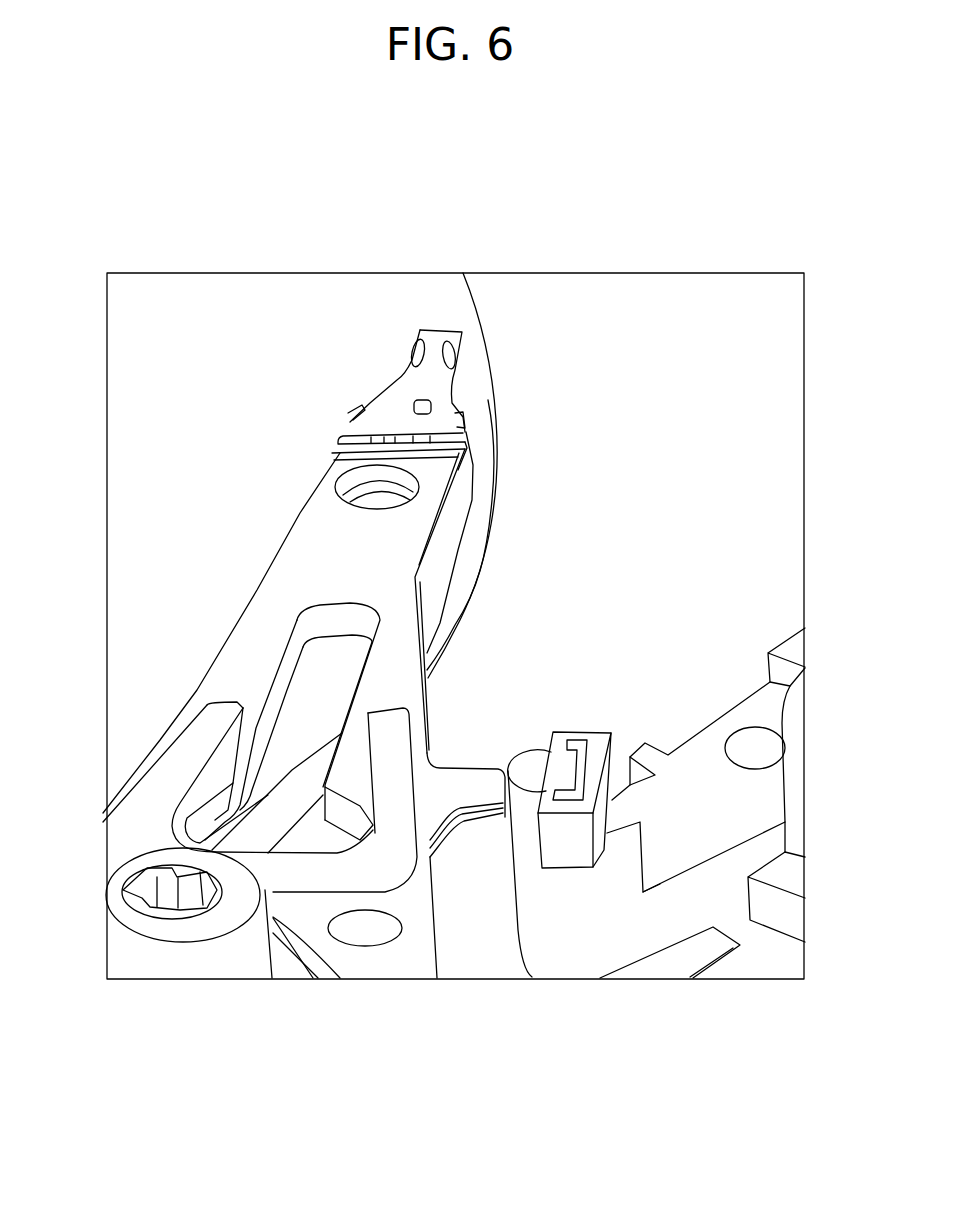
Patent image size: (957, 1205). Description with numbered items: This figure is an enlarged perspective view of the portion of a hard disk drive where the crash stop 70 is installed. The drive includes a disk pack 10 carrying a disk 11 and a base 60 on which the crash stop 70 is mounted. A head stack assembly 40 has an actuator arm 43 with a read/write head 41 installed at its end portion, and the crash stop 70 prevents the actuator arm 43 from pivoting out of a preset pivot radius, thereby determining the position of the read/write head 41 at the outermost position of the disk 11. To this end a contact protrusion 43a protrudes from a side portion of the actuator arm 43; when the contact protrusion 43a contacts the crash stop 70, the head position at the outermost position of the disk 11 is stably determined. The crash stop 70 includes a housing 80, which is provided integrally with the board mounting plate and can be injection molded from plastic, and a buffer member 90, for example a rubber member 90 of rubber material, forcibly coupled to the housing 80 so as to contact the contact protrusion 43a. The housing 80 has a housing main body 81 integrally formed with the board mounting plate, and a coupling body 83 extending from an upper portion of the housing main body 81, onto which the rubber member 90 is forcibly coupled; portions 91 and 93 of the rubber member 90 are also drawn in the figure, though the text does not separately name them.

The disk pack 10 is at (492, 318).
The disk 11 is at (300, 330).
The head stack assembly 40 is at (288, 506).
The read/write head 41 is at (443, 328).
The actuator arm 43 is at (288, 613).
The contact protrusion 43a is at (478, 790).
The base 60 is at (660, 402).
The crash stop 70 is at (738, 783).
The housing 80 is at (518, 932).
The housing main body 81 is at (645, 917).
The coupling body 83 is at (568, 848).
The buffer member 90 is at (572, 822).
The groove 91 is at (580, 763).
The stopper top 93 is at (545, 763).